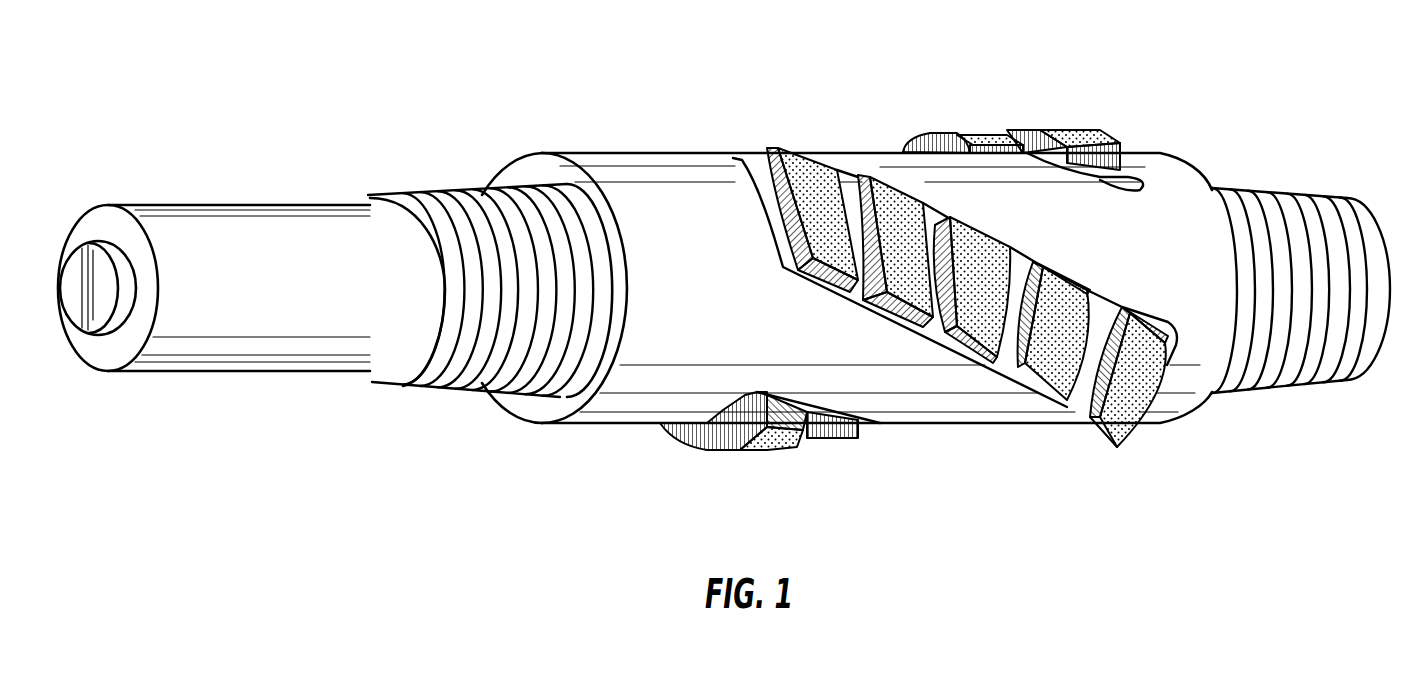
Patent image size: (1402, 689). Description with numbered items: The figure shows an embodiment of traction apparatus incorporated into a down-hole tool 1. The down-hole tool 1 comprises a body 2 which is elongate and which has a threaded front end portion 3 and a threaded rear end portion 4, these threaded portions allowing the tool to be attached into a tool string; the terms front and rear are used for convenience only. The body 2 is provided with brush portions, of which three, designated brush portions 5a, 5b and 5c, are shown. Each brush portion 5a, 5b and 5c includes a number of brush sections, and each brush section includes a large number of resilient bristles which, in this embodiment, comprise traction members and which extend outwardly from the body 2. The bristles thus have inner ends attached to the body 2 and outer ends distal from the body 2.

The down-hole tool 1 is at (578, 127).
The body 2 is at (876, 172).
The threaded front end portion 3 is at (1287, 205).
The threaded rear end portion 4 is at (482, 208).
The brush portion 5a is at (1065, 127).
The brush portion 5b is at (1128, 437).
The brush portion 5c is at (765, 438).